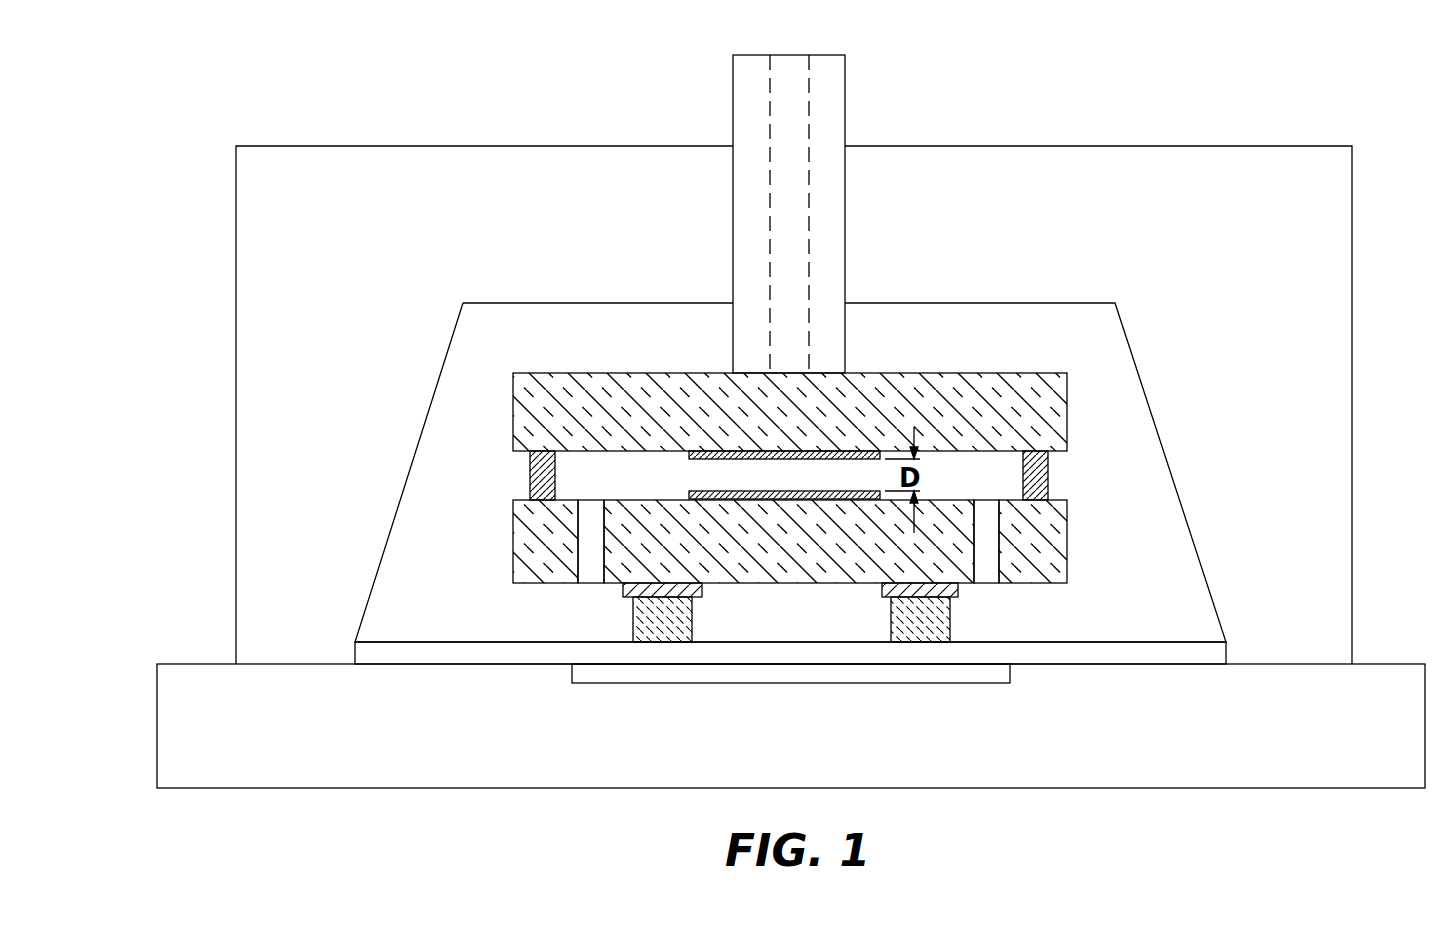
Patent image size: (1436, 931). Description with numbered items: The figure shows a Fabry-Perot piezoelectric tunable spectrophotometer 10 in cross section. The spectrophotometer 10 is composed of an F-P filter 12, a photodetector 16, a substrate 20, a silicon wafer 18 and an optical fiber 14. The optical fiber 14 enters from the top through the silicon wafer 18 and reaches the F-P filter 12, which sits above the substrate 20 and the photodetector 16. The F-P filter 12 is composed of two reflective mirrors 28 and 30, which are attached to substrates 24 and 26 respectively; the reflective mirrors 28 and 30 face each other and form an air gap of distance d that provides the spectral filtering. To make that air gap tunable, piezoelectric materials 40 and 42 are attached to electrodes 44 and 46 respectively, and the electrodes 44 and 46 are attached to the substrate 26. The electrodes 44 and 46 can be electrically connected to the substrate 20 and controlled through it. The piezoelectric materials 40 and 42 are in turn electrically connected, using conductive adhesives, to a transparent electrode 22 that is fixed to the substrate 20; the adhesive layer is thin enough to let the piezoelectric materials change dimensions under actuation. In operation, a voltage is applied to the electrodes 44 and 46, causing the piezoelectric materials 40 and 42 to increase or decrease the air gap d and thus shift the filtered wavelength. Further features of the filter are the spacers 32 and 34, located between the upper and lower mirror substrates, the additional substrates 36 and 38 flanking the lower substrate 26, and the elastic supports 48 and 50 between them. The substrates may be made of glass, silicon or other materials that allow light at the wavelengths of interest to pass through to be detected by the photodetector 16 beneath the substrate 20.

The spectrophotometer 10 is at (172, 115).
The F-P filter 12 is at (1118, 341).
The optical fiber 14 is at (847, 121).
The photodetector 16 is at (762, 674).
The silicon wafer 18 is at (1352, 259).
The substrate 20 is at (157, 721).
The transparent electrode 22 is at (1147, 641).
The substrate 24 is at (570, 373).
The substrate 26 is at (797, 583).
The reflective mirror 28 is at (687, 456).
The reflective mirror 30 is at (687, 493).
The spacer 32 is at (530, 473).
The spacer 34 is at (1048, 473).
The substrate 36 is at (513, 573).
The substrate 38 is at (1067, 540).
The piezoelectric material 40 is at (692, 618).
The piezoelectric material 42 is at (888, 617).
The electrode 44 is at (620, 592).
The electrode 46 is at (958, 592).
The elastic support 48 is at (590, 583).
The elastic support 50 is at (988, 583).